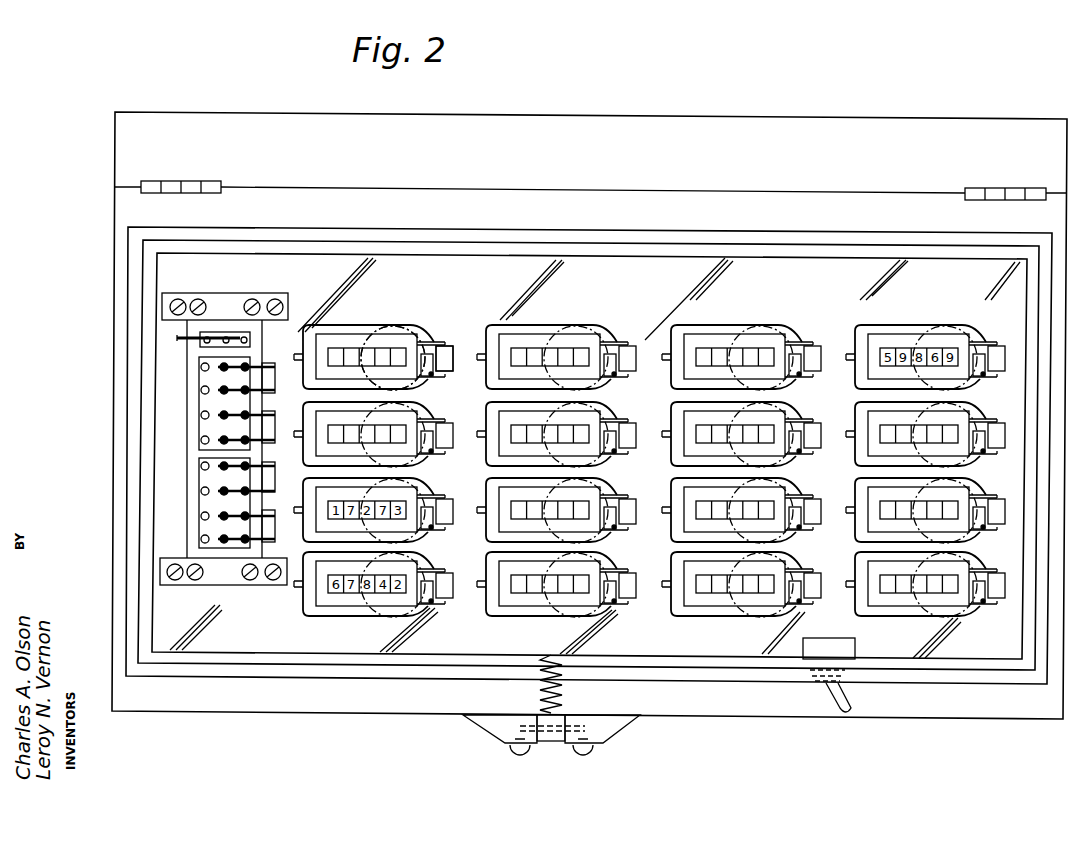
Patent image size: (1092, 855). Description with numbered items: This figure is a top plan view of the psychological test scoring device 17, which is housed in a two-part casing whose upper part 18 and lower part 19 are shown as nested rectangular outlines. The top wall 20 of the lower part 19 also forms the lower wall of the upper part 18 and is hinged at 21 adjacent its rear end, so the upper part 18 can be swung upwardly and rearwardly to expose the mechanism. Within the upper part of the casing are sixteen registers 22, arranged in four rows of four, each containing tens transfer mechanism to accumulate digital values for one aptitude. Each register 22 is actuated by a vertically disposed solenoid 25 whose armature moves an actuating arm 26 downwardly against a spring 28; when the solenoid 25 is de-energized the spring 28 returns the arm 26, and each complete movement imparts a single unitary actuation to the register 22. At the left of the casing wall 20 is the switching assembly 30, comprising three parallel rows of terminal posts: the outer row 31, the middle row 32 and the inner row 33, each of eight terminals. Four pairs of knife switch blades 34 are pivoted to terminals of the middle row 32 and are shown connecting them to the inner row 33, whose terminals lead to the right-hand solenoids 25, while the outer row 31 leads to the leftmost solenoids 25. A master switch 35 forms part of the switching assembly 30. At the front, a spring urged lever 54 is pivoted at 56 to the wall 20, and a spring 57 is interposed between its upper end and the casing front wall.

The psychological test scoring device 17 is at (586, 114).
The upper part of casing 18 is at (794, 128).
The lower part of casing 19 is at (878, 228).
The top wall 20 is at (711, 206).
The hinge 21 is at (1001, 192).
The register 22 is at (350, 343).
The solenoid 25 is at (404, 330).
The actuating arm 26 is at (432, 346).
The spring 28 is at (433, 452).
The switching assembly 30 is at (183, 439).
The outer row of terminals 31 is at (208, 442).
The middle row of terminals 32 is at (222, 492).
The inner row of terminals 33 is at (236, 540).
The knife switch blades 34 is at (236, 370).
The master switch 35 is at (238, 318).
The spring urged lever 54 is at (554, 740).
The pivot 56 is at (520, 728).
The spring 57 is at (564, 694).